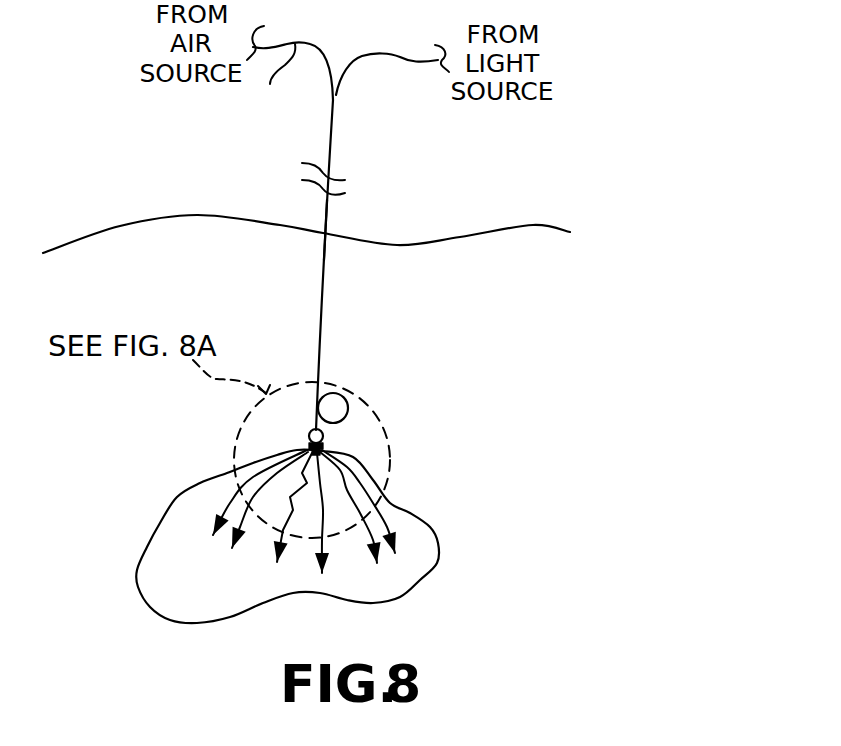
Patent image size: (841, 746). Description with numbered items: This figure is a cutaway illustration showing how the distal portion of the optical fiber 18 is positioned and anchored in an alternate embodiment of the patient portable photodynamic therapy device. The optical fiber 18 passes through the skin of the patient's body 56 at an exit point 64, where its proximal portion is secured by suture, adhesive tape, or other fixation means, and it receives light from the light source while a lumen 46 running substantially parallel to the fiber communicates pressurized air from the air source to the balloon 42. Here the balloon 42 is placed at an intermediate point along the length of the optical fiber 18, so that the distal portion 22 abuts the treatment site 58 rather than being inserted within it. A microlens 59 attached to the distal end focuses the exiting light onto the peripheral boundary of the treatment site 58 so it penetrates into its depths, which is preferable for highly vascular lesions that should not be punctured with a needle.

The optical fiber 18 is at (320, 316).
The distal portion 22 is at (309, 436).
The balloon 42 is at (347, 412).
The lumen 46 is at (293, 82).
The patient's body 56 is at (422, 272).
The treatment site 58 is at (410, 530).
The microlens 59 is at (230, 472).
The exit point 64 is at (325, 228).